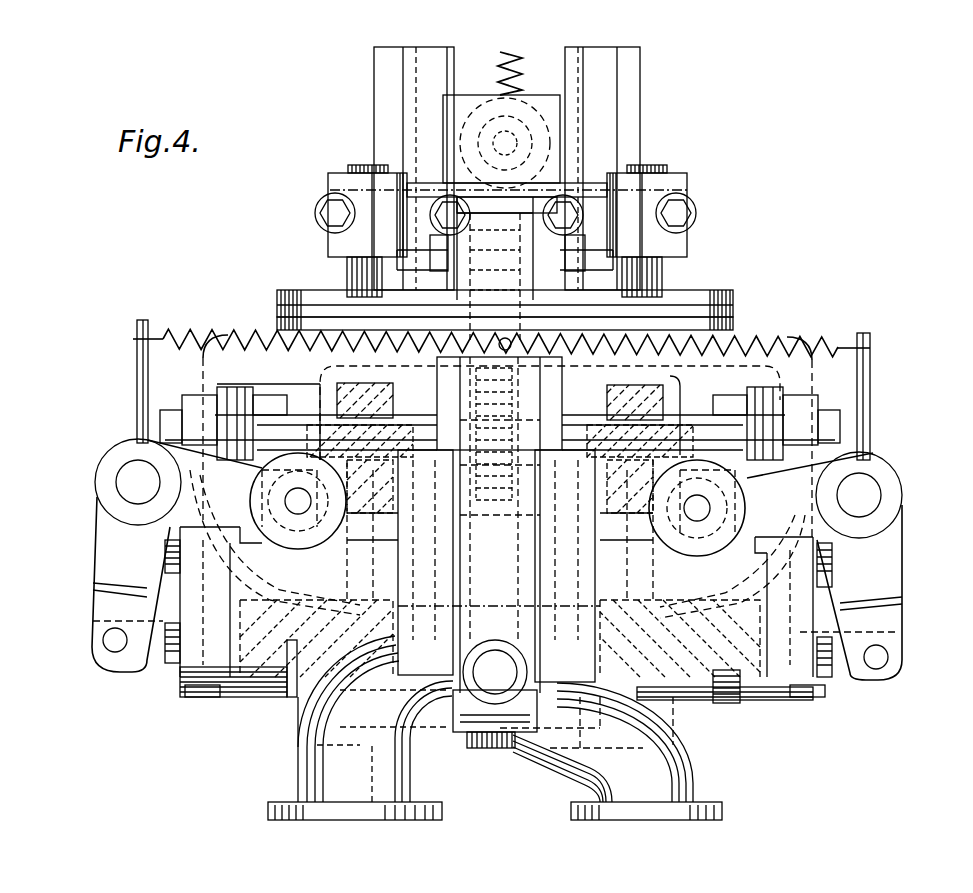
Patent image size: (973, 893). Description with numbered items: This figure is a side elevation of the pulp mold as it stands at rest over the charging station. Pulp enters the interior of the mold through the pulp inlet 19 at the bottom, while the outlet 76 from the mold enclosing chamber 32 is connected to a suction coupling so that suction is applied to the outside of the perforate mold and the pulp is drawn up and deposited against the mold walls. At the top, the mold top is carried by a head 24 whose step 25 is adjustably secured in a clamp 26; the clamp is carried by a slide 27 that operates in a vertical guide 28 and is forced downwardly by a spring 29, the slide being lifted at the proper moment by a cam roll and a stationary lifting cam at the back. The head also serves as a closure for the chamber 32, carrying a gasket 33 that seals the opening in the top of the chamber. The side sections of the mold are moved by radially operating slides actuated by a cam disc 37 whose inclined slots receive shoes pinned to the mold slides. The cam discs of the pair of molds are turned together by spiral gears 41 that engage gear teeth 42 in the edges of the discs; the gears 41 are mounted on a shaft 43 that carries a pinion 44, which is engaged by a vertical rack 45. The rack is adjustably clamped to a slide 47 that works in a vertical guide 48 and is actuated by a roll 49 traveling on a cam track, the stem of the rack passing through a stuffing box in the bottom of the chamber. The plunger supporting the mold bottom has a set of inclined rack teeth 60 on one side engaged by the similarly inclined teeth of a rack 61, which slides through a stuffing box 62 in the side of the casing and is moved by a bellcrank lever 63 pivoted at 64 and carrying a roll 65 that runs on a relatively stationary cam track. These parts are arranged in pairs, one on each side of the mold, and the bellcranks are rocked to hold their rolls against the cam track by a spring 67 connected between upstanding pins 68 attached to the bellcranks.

The pulp inlet 19 is at (587, 780).
The head 24 is at (327, 290).
The step 25 is at (345, 268).
The clamp 26 is at (330, 178).
The slide 27 is at (466, 95).
The vertical guide 28 is at (575, 84).
The spring 29 is at (518, 69).
The mold enclosing chamber 32 is at (785, 338).
The gasket 33 is at (277, 307).
The cam disc 37 is at (238, 427).
The spiral gears 41 is at (378, 392).
The gear teeth 42 is at (303, 427).
The shaft 43 is at (447, 413).
The pinion 44 is at (510, 412).
The vertical rack 45 is at (487, 297).
The slide 47 is at (499, 547).
The vertical guide 48 is at (565, 566).
The roll 49 is at (503, 647).
The inclined rack teeth 60 is at (353, 578).
The rack 61 is at (148, 660).
The stuffing box 62 is at (197, 688).
The bellcrank lever 63 is at (915, 580).
The pivot 64 is at (128, 482).
The roll 65 is at (287, 541).
The spring 67 is at (172, 333).
The upstanding pins 68 is at (137, 373).
The outlet 76 is at (300, 770).